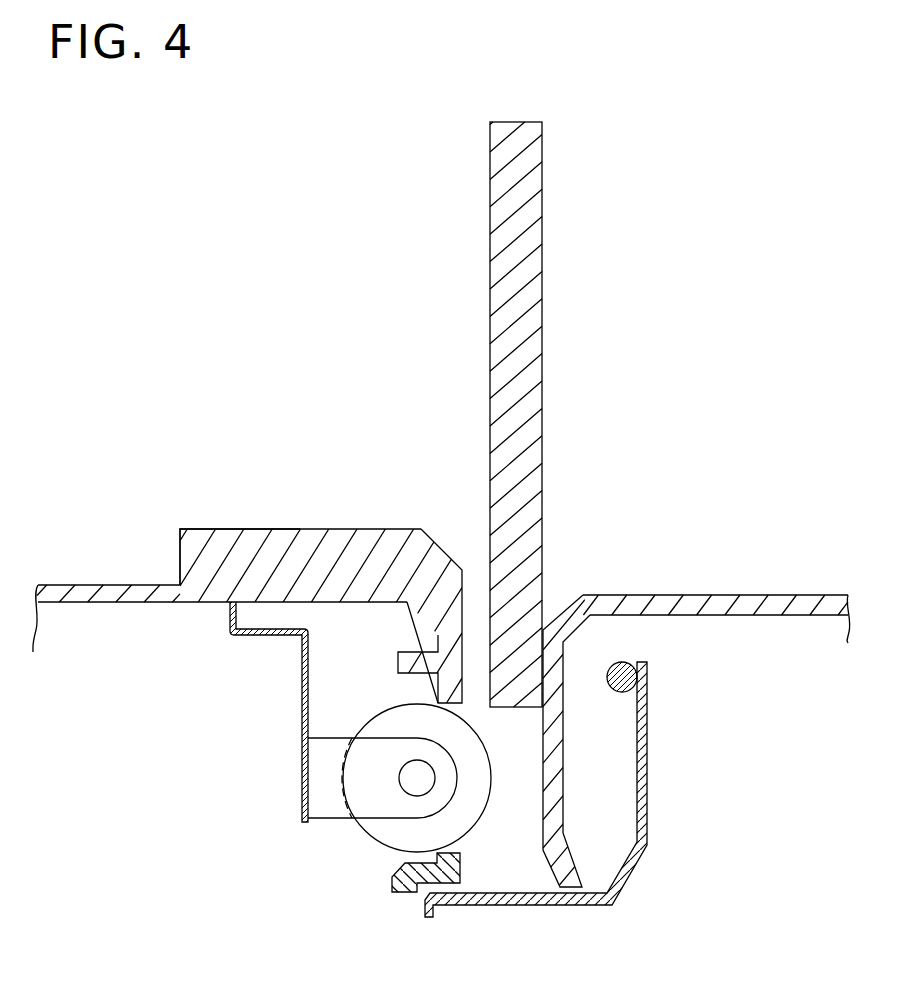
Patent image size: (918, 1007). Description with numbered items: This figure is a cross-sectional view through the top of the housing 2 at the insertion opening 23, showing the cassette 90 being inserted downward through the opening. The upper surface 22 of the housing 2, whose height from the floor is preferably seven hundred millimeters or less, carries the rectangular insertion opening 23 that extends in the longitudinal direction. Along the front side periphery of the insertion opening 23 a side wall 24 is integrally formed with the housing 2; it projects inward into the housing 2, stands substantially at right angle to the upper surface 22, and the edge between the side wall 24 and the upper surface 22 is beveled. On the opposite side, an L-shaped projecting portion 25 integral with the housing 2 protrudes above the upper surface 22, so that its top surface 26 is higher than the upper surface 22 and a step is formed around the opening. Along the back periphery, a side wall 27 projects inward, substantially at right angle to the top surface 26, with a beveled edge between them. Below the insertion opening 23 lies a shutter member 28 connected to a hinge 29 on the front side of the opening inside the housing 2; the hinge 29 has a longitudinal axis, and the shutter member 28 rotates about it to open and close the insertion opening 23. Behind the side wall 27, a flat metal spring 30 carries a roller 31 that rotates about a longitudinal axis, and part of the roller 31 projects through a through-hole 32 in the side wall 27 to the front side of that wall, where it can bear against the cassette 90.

The housing 2 is at (80, 584).
The upper surface 22 is at (777, 602).
The insertion opening 23 is at (473, 590).
The side wall 24 is at (563, 758).
The projecting portion 25 is at (220, 540).
The top surface 26 is at (278, 530).
The side wall 27 is at (447, 690).
The shutter member 28 is at (646, 823).
The hinge 29 is at (622, 662).
The flat metal spring 30 is at (302, 770).
The roller 31 is at (400, 837).
The through-hole 32 is at (462, 845).
The cassette 90 is at (535, 205).